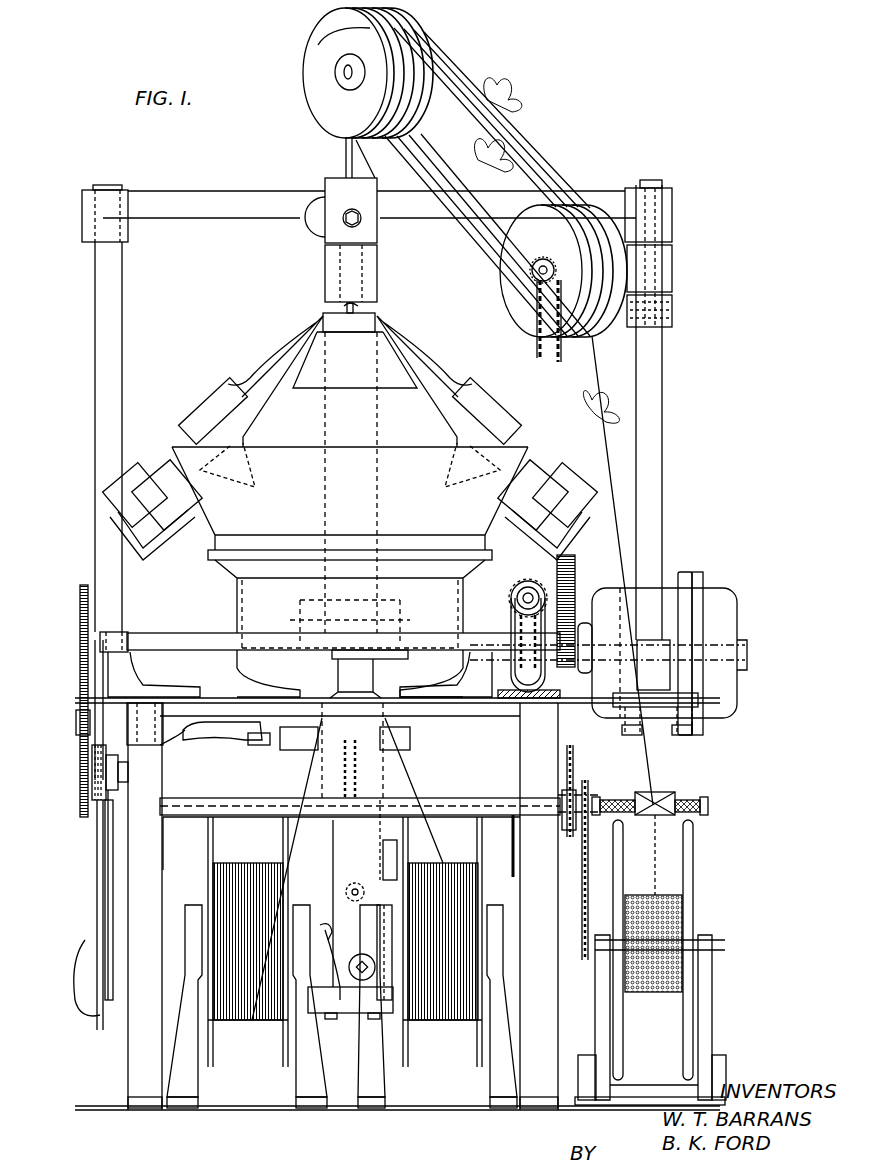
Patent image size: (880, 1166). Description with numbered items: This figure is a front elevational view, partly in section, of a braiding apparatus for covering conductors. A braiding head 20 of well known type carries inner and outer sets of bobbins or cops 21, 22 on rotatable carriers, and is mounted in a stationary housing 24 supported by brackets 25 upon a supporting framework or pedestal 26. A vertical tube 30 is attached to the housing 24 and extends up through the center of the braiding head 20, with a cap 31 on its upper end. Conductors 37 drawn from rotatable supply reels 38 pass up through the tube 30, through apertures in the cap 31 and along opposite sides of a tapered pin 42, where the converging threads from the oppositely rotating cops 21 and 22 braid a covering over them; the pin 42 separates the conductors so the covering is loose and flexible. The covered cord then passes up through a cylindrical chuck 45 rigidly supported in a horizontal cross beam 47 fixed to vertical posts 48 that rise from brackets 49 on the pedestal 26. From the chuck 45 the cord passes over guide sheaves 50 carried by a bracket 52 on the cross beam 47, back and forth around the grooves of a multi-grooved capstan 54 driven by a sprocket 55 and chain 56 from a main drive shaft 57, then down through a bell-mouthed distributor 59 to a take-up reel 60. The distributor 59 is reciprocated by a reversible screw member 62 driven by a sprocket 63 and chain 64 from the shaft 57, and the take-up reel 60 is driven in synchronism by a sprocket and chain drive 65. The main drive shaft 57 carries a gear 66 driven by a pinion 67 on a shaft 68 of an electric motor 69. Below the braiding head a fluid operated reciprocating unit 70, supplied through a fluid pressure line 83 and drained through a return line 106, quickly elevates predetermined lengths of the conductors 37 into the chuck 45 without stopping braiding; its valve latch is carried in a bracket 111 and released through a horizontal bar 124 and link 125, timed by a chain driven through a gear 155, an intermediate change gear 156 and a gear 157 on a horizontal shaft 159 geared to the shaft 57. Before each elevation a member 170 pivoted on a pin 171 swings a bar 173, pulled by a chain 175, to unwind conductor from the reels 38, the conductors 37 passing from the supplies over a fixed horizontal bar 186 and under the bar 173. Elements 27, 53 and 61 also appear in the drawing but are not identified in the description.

The braiding head 20 is at (350, 474).
The inner set of bobbins or cops 21 is at (288, 338).
The outer set of bobbins or cops 22 is at (130, 470).
The stationary housing 24 is at (238, 606).
The brackets 25 is at (460, 648).
The supporting framework or pedestal 26 is at (475, 710).
The lower frame 27 is at (397, 906).
The vertical tube 30 is at (320, 458).
The cap 31 is at (335, 318).
The conductors 37 is at (395, 758).
The supply reels 38 is at (213, 1030).
The tapered pin 42 is at (360, 308).
The cylindrical chuck 45 is at (320, 270).
The horizontal cross beam 47 is at (212, 212).
The vertical posts 48 is at (115, 278).
The brackets 49 is at (700, 705).
The guide sheaves 50 is at (308, 108).
The bracket 52 is at (345, 155).
The belt 53 is at (502, 225).
The multi-grooved capstan 54 is at (555, 225).
The sprocket 55 is at (560, 285).
The chain 56 is at (575, 325).
The main drive shaft 57 is at (528, 580).
The bell-mouthed distributor 59 is at (675, 805).
The take-up reel 60 is at (695, 845).
The cord 61 is at (623, 615).
The reversible screw member 62 is at (632, 792).
The sprocket 63 is at (568, 835).
The chain 64 is at (580, 768).
The sprocket and chain drive 65 is at (592, 880).
The gear 66 is at (572, 575).
The pinion 67 is at (582, 640).
The shaft 68 is at (660, 672).
The electric motor 69 is at (715, 598).
The fluid operated reciprocating unit 70 is at (330, 978).
The fluid pressure line 83 is at (345, 895).
The return line 106 is at (336, 924).
The bracket 111 is at (395, 745).
The horizontal bar 124 is at (272, 748).
The link 125 is at (212, 742).
The gear 155 is at (72, 782).
The intermediate change gear 156 is at (72, 700).
The gear 157 is at (90, 600).
The horizontal shaft 159 is at (308, 645).
The pivoted member 170 is at (115, 885).
The pin 171 is at (105, 1000).
The bar 173 is at (262, 820).
The chain 175 is at (90, 875).
The fixed horizontal bar 186 is at (503, 808).